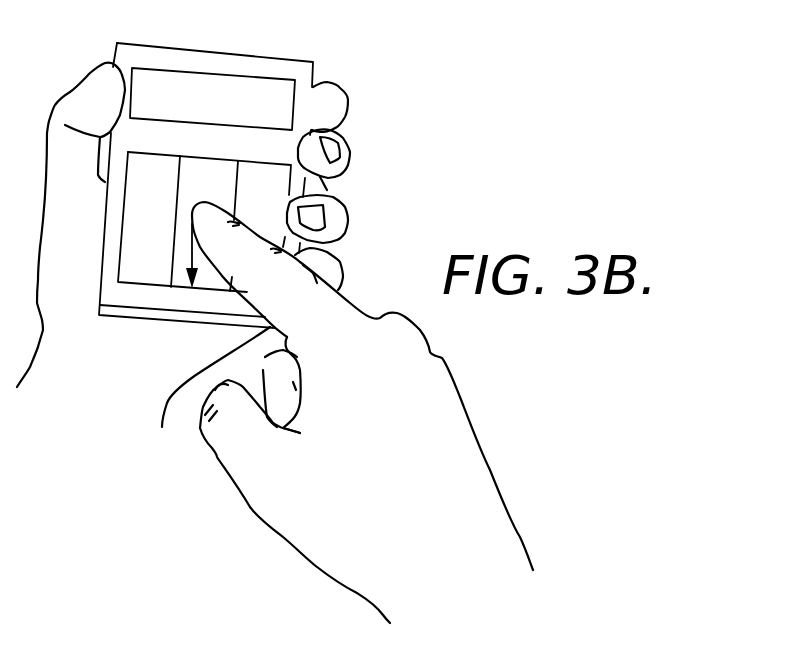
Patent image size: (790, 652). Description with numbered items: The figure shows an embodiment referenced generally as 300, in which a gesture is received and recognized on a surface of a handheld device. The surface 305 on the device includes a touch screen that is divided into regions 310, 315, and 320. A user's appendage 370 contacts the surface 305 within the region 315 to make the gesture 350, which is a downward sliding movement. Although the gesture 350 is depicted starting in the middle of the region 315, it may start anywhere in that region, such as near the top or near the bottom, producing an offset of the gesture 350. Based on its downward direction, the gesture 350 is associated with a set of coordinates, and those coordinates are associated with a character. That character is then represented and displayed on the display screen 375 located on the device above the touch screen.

The embodiment environment 300 is at (138, 342).
The surface 305 is at (100, 308).
The region 310 is at (147, 232).
The region 315 is at (200, 175).
The region 320 is at (267, 183).
The gesture 350 is at (192, 290).
The user's appendage 370 is at (207, 204).
The display screen 375 is at (218, 88).